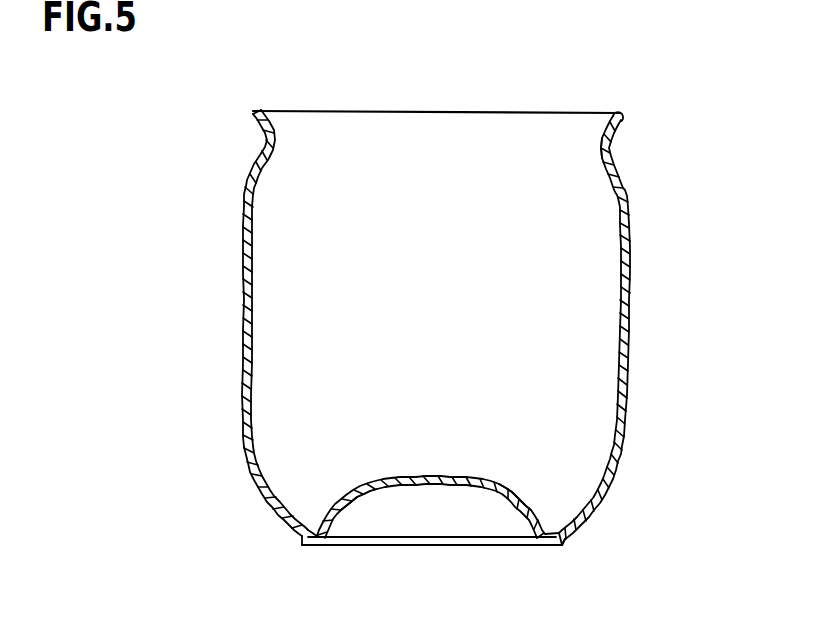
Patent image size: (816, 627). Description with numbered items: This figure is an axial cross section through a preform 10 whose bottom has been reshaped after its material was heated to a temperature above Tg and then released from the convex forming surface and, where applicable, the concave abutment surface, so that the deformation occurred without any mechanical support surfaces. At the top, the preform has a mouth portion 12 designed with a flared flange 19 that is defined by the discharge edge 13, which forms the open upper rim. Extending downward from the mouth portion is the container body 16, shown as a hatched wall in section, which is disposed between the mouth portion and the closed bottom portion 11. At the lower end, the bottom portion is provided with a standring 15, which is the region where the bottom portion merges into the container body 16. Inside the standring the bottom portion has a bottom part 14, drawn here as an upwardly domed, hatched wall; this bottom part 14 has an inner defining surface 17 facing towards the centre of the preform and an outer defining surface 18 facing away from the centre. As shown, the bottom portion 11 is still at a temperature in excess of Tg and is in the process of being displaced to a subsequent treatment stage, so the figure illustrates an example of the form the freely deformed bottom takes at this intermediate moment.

The preform 10 is at (630, 333).
The closed bottom portion 11 is at (530, 495).
The mouth portion 12 is at (600, 150).
The discharge edge 13 is at (620, 112).
The bottom part 14 is at (442, 480).
The standring 15 is at (556, 546).
The container body 16 is at (243, 335).
The inner defining surface 17 is at (370, 480).
The outer defining surface 18 is at (385, 495).
The flared flange 19 is at (622, 122).